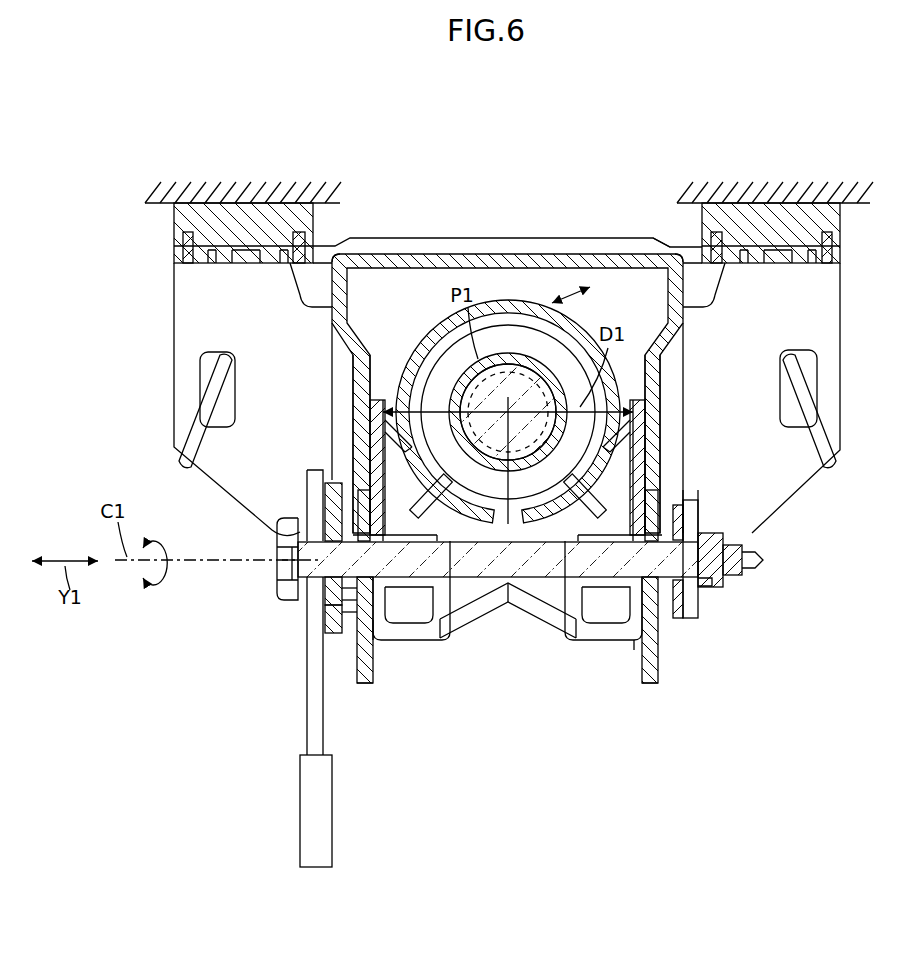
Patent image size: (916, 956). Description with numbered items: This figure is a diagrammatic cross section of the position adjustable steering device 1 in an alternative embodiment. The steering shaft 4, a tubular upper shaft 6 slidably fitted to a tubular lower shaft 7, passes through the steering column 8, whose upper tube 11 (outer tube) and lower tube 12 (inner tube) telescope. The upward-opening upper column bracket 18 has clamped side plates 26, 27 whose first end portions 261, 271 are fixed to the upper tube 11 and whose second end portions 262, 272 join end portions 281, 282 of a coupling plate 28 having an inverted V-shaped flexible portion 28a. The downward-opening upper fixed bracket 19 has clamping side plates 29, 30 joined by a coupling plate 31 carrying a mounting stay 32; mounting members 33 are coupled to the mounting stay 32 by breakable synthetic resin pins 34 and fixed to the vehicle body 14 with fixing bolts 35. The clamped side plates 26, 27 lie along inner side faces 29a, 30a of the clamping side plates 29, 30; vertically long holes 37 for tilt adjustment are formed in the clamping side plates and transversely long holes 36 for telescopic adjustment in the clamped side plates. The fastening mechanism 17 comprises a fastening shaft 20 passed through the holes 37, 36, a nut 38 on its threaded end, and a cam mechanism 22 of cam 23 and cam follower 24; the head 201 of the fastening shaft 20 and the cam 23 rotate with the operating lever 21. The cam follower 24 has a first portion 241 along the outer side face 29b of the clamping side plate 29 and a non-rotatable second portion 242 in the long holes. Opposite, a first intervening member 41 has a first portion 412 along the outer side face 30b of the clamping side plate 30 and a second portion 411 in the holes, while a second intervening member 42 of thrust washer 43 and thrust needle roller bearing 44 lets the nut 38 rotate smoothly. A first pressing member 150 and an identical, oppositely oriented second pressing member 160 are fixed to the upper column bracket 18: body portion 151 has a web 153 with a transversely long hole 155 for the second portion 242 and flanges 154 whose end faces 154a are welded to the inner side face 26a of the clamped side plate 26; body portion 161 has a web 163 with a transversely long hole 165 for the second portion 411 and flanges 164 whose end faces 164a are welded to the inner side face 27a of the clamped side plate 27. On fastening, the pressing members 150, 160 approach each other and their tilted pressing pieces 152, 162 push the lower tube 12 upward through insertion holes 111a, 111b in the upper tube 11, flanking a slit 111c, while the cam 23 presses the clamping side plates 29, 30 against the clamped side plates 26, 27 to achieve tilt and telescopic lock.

The position adjustable steering device 1 is at (574, 220).
The steering shaft 4 is at (553, 205).
The upper shaft 6 is at (503, 358).
The lower shaft 7 is at (527, 392).
The steering column 8 is at (452, 197).
The upper tube 11 is at (440, 342).
The lower tube 12 is at (408, 337).
The vehicle body 14 is at (243, 195).
The fastening mechanism 17 is at (268, 593).
The upper column bracket 18 is at (362, 681).
The upper fixed bracket 19 is at (598, 237).
The fastening shaft 20 is at (528, 584).
The operating lever 21 is at (305, 740).
The cam mechanism 22 is at (268, 650).
The cam 23 is at (325, 640).
The cam follower 24 is at (322, 660).
The clamped side plate 26 is at (373, 473).
The inner side face of clamped side plate 26a is at (350, 462).
The clamped side plate 27 is at (642, 473).
The inner side face of clamped side plate 27a is at (665, 462).
The coupling plate 28 is at (408, 608).
The flexible portion 28a is at (534, 578).
The clamping side plate 29 is at (353, 372).
The inner side face of clamping side plate 29a is at (367, 440).
The outer side face of clamping side plate 29b is at (340, 355).
The clamping side plate 30 is at (660, 372).
The inner side face of clamping side plate 30a is at (648, 440).
The outer side face of clamping side plate 30b is at (675, 355).
The coupling plate 31 is at (477, 262).
The mounting stay 32 is at (656, 237).
The mounting member 33 is at (172, 226).
The synthetic resin pin 34 is at (183, 250).
The fixing bolt 35 is at (242, 265).
The transversely long hole 36 is at (610, 605).
The vertically long hole 37 is at (265, 520).
The nut 38 is at (716, 583).
The first intervening member 41 is at (670, 620).
The second intervening member 42 is at (827, 510).
The thrust washer 43 is at (728, 536).
The thrust needle roller bearing 44 is at (735, 548).
The insertion hole 111a is at (318, 497).
The insertion hole 111b is at (697, 497).
The slit 111c is at (493, 640).
The first pressing member 150 is at (468, 590).
The body portion 151 is at (378, 783).
The pressing piece 152 is at (442, 507).
The web 153 is at (443, 640).
The flange 154 is at (413, 640).
The end face of flange 154a is at (290, 545).
The transversely long hole 155 is at (500, 524).
The second pressing member 160 is at (585, 592).
The body portion 161 is at (540, 775).
The pressing piece 162 is at (575, 507).
The web 163 is at (583, 642).
The flange 164 is at (622, 642).
The threaded end 164a is at (757, 568).
The transversely long hole 165 is at (545, 642).
The head 201 is at (278, 580).
The first portion of cam follower 241 is at (340, 612).
The second portion of cam follower 242 is at (325, 590).
The first end portion of clamped side plate 261 is at (363, 393).
The second end portion of clamped side plate 262 is at (335, 606).
The first end portion of clamped side plate 271 is at (652, 393).
The second end portion of clamped side plate 272 is at (657, 615).
The end portion of coupling plate 281 is at (377, 625).
The end portion of coupling plate 282 is at (628, 640).
The second portion of first intervening member 411 is at (685, 590).
The first portion of first intervening member 412 is at (690, 615).